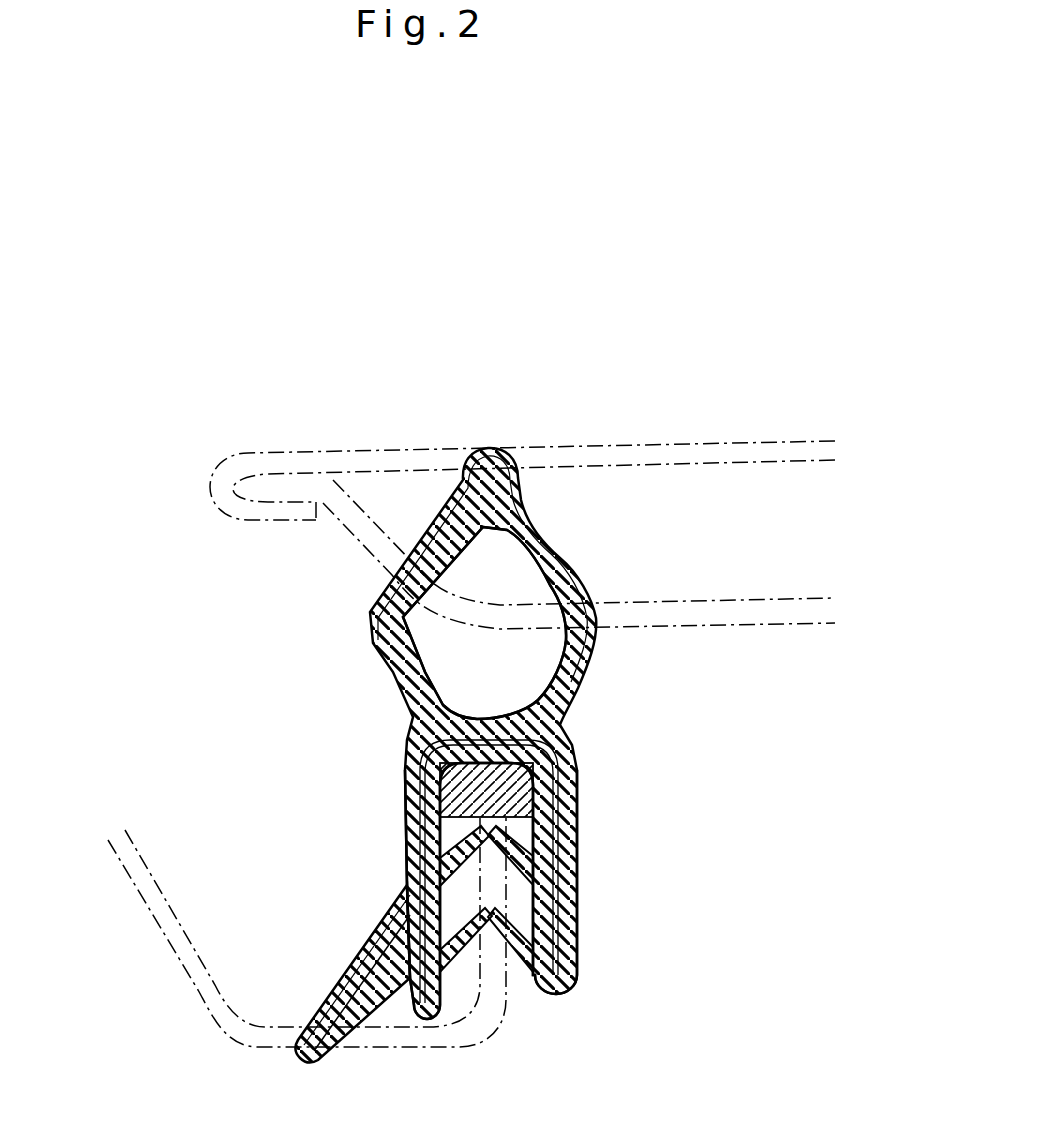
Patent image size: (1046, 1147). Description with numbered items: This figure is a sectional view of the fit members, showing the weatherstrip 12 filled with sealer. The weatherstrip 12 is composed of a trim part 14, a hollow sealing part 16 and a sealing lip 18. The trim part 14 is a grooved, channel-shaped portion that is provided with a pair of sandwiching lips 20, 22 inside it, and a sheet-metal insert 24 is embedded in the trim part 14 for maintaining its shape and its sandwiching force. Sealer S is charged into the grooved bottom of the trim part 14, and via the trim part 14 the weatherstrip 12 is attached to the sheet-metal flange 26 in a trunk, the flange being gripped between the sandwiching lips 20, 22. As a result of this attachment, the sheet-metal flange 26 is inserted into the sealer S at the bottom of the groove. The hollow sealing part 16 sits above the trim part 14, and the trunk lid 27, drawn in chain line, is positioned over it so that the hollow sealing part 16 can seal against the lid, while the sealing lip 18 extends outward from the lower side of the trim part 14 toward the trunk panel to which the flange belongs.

The weatherstrip 12 is at (388, 667).
The trim part 14 is at (572, 827).
The hollow sealing part 16 is at (570, 663).
The sealing lip 18 is at (370, 1003).
The sandwiching lip 20 is at (573, 853).
The sandwiching lip 22 is at (573, 923).
The sheet-metal insert 24 is at (573, 757).
The sheet-metal flange 26 is at (490, 997).
The trunk lid 27 is at (625, 447).
The sealer S is at (407, 767).